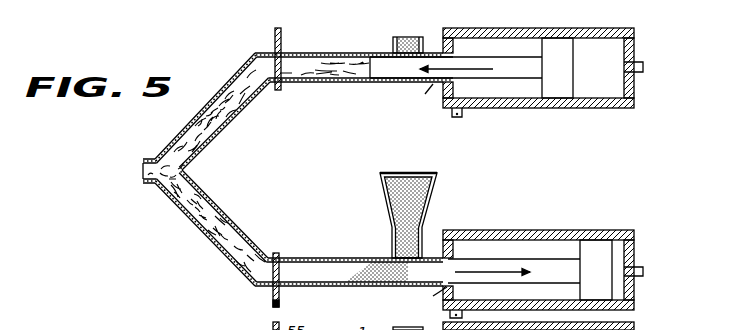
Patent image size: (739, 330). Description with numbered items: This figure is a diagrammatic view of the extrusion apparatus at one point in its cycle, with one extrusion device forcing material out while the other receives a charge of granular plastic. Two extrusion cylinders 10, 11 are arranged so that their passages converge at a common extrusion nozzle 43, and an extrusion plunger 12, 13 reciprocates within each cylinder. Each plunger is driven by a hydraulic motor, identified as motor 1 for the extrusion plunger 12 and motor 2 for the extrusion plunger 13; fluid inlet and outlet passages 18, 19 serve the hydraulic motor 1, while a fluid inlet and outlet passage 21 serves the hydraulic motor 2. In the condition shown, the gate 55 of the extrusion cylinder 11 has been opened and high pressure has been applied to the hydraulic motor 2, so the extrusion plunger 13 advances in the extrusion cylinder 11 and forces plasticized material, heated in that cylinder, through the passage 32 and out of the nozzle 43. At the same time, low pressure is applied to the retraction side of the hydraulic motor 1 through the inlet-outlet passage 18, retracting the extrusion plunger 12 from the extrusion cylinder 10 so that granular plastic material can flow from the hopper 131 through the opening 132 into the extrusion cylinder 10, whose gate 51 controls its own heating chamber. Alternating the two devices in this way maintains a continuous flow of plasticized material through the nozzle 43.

The hydraulic motor 1 is at (596, 270).
The hydraulic motor 2 is at (557, 68).
The extrusion cylinder 10 is at (299, 263).
The extrusion cylinder 11 is at (305, 84).
The extrusion plunger 12 is at (531, 264).
The extrusion plunger 13 is at (516, 65).
The fluid inlet and outlet passage 18 is at (460, 311).
The fluid inlet and outlet passage 19 is at (643, 271).
The fluid inlet and outlet passage 21 is at (643, 67).
The passage 32 is at (194, 122).
The extrusion nozzle 43 is at (143, 178).
The gate 51 is at (272, 305).
The gate 55 is at (281, 44).
The hopper 131 is at (436, 200).
The opening 132 is at (396, 258).